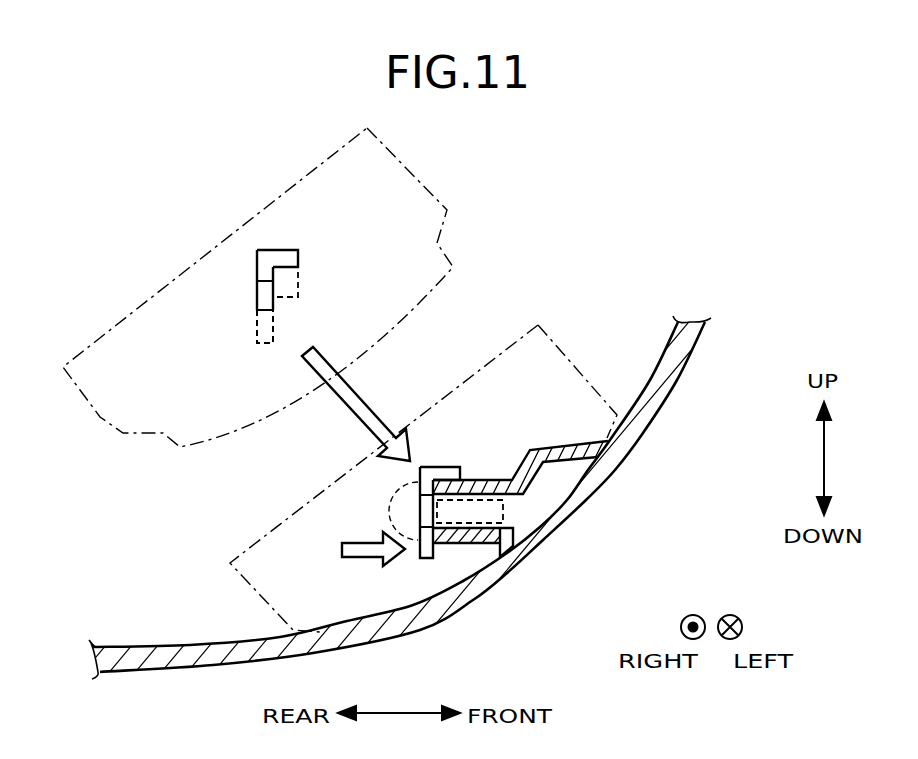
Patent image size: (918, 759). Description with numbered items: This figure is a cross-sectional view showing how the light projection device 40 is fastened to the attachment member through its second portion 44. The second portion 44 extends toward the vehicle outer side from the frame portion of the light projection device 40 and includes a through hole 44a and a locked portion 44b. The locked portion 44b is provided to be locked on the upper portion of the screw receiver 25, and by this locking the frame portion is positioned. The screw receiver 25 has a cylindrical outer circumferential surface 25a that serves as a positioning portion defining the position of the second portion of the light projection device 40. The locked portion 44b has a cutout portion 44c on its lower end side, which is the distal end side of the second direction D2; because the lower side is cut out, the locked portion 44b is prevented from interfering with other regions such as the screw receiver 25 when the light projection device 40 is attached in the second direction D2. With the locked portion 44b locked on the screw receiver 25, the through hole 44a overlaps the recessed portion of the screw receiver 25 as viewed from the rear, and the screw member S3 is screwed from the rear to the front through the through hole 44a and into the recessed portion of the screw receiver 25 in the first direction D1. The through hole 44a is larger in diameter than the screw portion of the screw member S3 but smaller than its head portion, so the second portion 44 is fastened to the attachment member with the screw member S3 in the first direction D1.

The light projection device 40 is at (147, 297).
The second portion 44 is at (262, 236).
The through hole 44a is at (253, 297).
The locked portion 44b is at (286, 257).
The cutout portion 44c is at (287, 297).
The screw receiver 25 is at (508, 477).
The outer circumferential surface 25a is at (468, 544).
The screw member S3 is at (395, 511).
The first direction D1 is at (364, 561).
The second direction D2 is at (352, 415).